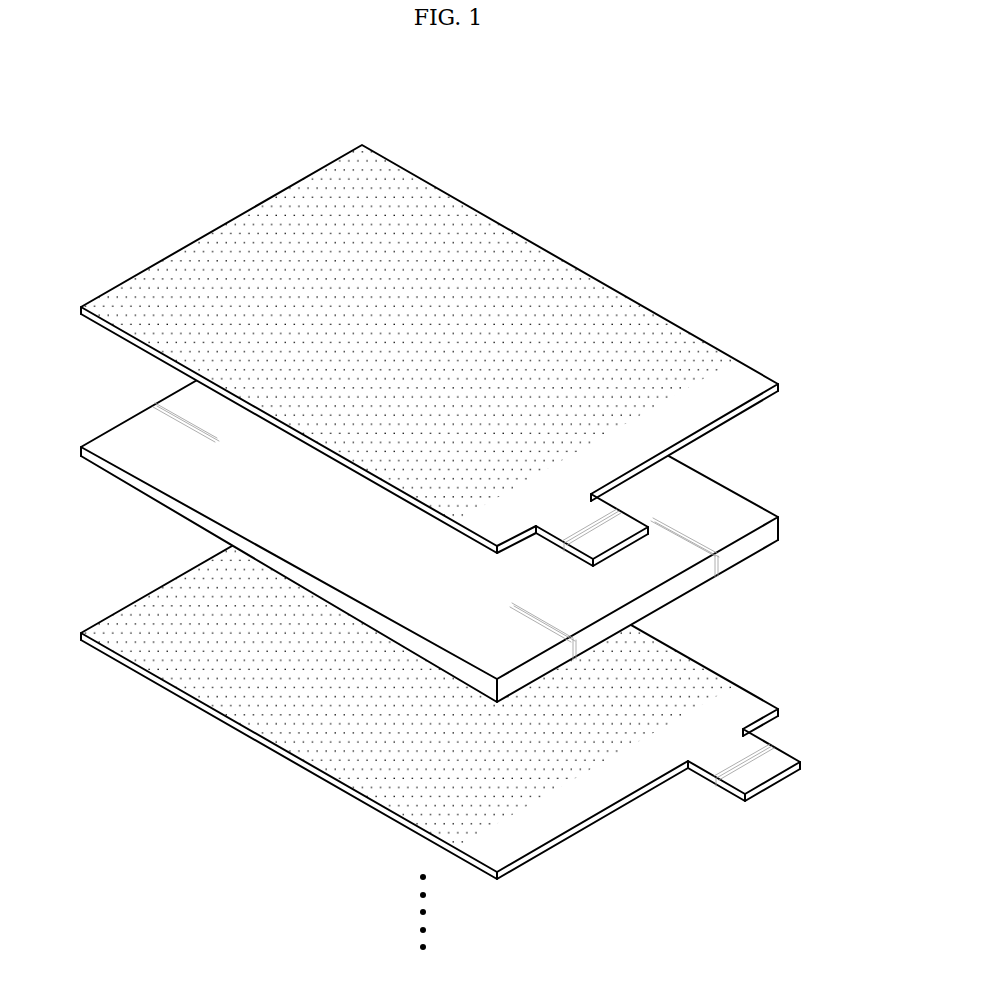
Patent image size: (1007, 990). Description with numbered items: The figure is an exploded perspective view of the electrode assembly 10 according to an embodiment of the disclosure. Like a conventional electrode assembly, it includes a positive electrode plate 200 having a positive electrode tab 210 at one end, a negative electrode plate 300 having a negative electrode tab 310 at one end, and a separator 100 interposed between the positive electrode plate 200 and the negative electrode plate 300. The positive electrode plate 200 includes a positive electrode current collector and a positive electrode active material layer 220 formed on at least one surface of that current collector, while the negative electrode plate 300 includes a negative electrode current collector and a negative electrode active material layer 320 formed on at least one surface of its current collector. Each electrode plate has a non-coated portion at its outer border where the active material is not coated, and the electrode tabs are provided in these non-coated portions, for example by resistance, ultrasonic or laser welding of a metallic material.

The electrode assembly 10 is at (760, 117).
The separator 100 is at (740, 556).
The positive electrode plate 200 is at (440, 355).
The positive electrode tab 210 is at (613, 537).
The positive electrode active material layer 220 is at (583, 284).
The negative electrode plate 300 is at (450, 675).
The negative electrode tab 310 is at (770, 770).
The negative electrode active material layer 320 is at (699, 677).